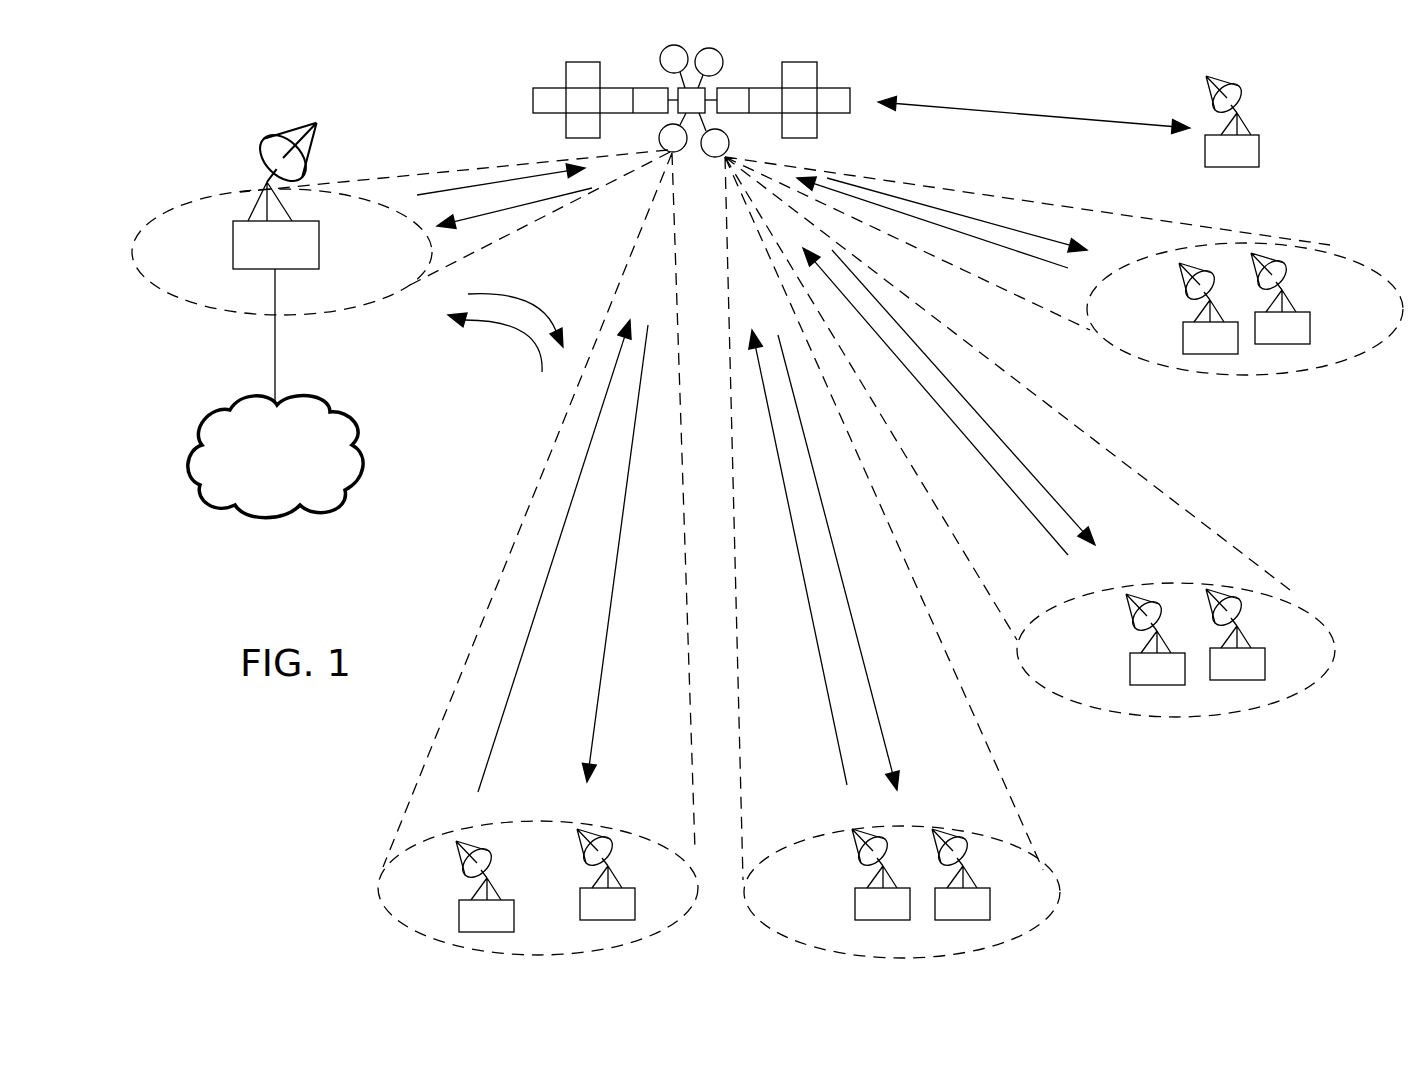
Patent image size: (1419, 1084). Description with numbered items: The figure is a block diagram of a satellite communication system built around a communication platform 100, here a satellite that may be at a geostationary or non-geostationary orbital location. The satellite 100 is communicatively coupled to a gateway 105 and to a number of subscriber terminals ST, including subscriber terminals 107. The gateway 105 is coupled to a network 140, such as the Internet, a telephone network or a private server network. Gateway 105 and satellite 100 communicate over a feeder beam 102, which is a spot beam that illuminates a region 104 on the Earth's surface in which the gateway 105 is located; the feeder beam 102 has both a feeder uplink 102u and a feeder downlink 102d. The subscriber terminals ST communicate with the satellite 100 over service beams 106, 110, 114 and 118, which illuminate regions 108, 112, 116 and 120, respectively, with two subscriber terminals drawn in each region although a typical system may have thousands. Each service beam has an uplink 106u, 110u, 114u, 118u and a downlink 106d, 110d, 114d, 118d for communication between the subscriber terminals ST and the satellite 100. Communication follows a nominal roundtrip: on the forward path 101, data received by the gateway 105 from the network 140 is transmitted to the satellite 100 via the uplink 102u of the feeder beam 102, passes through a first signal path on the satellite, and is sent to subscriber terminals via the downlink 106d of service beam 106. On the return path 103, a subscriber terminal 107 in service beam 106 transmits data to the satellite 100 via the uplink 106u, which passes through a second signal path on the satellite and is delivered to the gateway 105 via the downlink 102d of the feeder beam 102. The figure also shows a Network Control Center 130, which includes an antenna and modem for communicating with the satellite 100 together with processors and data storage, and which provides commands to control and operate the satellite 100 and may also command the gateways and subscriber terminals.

The communication platform 100 is at (853, 78).
The forward path 101 is at (527, 297).
The feeder beam 102 is at (443, 172).
The feeder uplink 102u is at (506, 177).
The feeder downlink 102d is at (523, 200).
The return path 103 is at (482, 350).
The region 104 is at (282, 252).
The gateway 105 is at (319, 244).
The service beam 106 is at (513, 555).
The uplink of service beam 106 106u is at (523, 652).
The downlink of service beam 106 106d is at (593, 725).
The subscriber terminal 107 is at (514, 915).
The region 108 is at (538, 888).
The service beam 110 is at (1022, 803).
The uplink of service beam 110 110u is at (838, 748).
The downlink of service beam 110 110d is at (877, 713).
The region 112 is at (902, 892).
The service beam 114 is at (1212, 522).
The uplink of service beam 114 114u is at (1038, 525).
The downlink of service beam 114 114d is at (1035, 478).
The region 116 is at (1176, 650).
The service beam 118 is at (1055, 312).
The uplink of service beam 118 118u is at (988, 243).
The downlink of service beam 118 118d is at (1023, 233).
The region 120 is at (1245, 309).
The Network Control Center 130 is at (1259, 155).
The network 140 is at (365, 462).